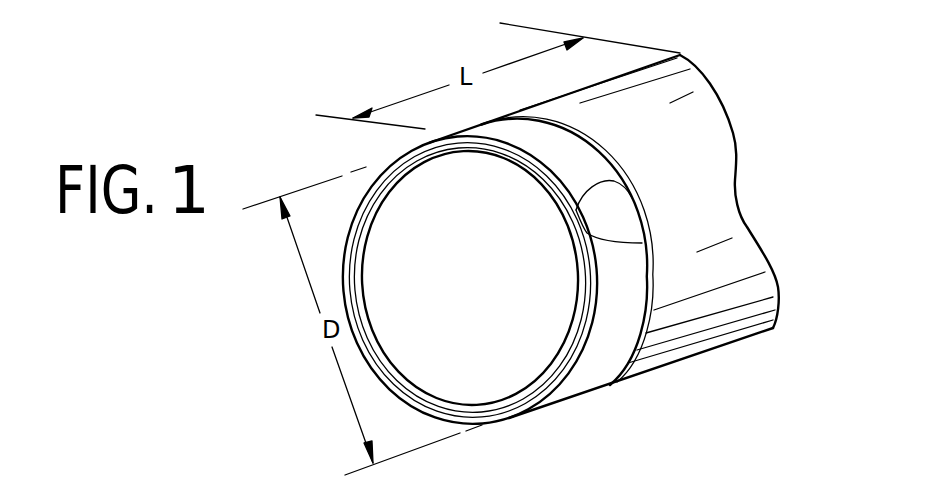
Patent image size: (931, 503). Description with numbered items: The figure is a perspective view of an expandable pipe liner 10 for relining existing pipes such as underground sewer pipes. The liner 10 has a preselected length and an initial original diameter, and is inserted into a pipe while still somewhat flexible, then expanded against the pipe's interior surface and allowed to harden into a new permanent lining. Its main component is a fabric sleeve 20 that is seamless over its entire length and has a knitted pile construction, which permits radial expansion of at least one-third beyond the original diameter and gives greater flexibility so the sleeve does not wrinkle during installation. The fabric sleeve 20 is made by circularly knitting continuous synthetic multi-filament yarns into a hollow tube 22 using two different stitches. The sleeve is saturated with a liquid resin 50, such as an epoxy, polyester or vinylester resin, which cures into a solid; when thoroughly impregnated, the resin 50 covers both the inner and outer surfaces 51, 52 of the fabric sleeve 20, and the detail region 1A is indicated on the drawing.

The expandable pipe liner 10 is at (742, 92).
The fabric sleeve 20 is at (576, 392).
The hollow tube 22 is at (597, 366).
The resin 50 is at (411, 162).
The inner surface 51 is at (361, 216).
The outer surface 52 is at (569, 159).
The section detail 1A is at (621, 215).